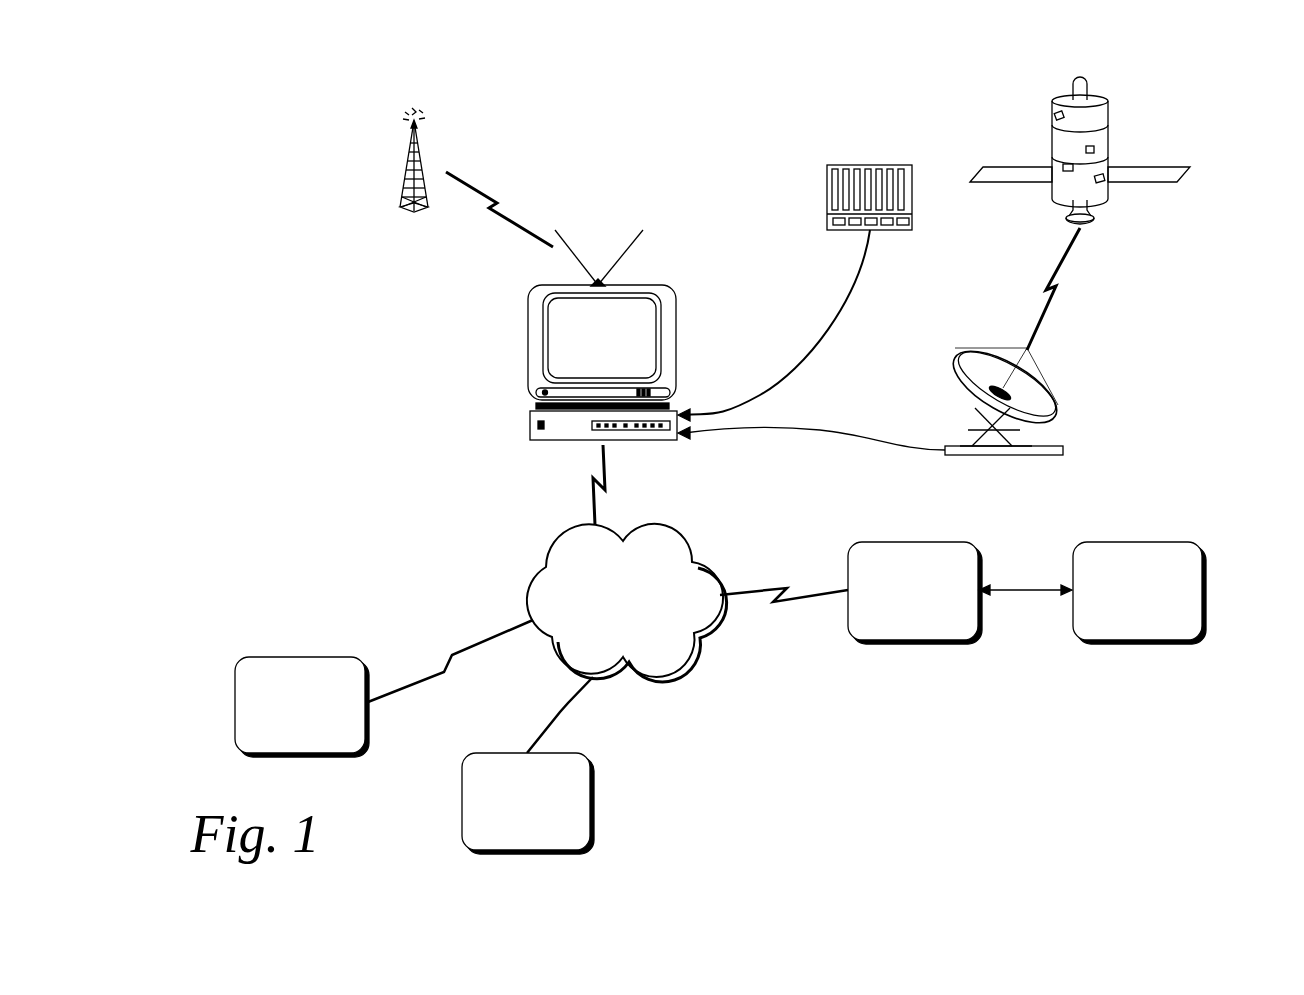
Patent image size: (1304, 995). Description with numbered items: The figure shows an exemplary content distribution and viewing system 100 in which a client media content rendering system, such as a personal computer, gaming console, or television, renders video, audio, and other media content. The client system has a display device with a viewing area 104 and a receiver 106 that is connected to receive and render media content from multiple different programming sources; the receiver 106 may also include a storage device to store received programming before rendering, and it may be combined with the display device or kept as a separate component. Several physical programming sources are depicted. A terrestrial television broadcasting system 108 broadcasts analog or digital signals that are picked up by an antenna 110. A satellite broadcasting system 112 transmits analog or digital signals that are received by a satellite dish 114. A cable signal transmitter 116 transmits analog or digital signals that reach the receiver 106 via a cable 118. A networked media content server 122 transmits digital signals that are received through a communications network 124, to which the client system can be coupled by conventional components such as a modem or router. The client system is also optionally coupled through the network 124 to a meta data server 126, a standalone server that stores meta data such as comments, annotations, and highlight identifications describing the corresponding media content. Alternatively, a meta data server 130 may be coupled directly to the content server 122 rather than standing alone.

The content distribution and viewing system 100 is at (548, 87).
The viewing area 104 is at (653, 344).
The receiver 106 is at (553, 444).
The terrestrial television broadcasting system 108 is at (407, 148).
The antenna 110 is at (637, 240).
The satellite broadcasting system 112 is at (1058, 103).
The satellite dish 114 is at (1058, 402).
The cable signal transmitter 116 is at (826, 168).
The cable 118 is at (785, 363).
The networked media content server 122 is at (972, 550).
The communications network 124 is at (562, 552).
The meta data server 126 is at (470, 760).
The meta data server 130 is at (1197, 550).